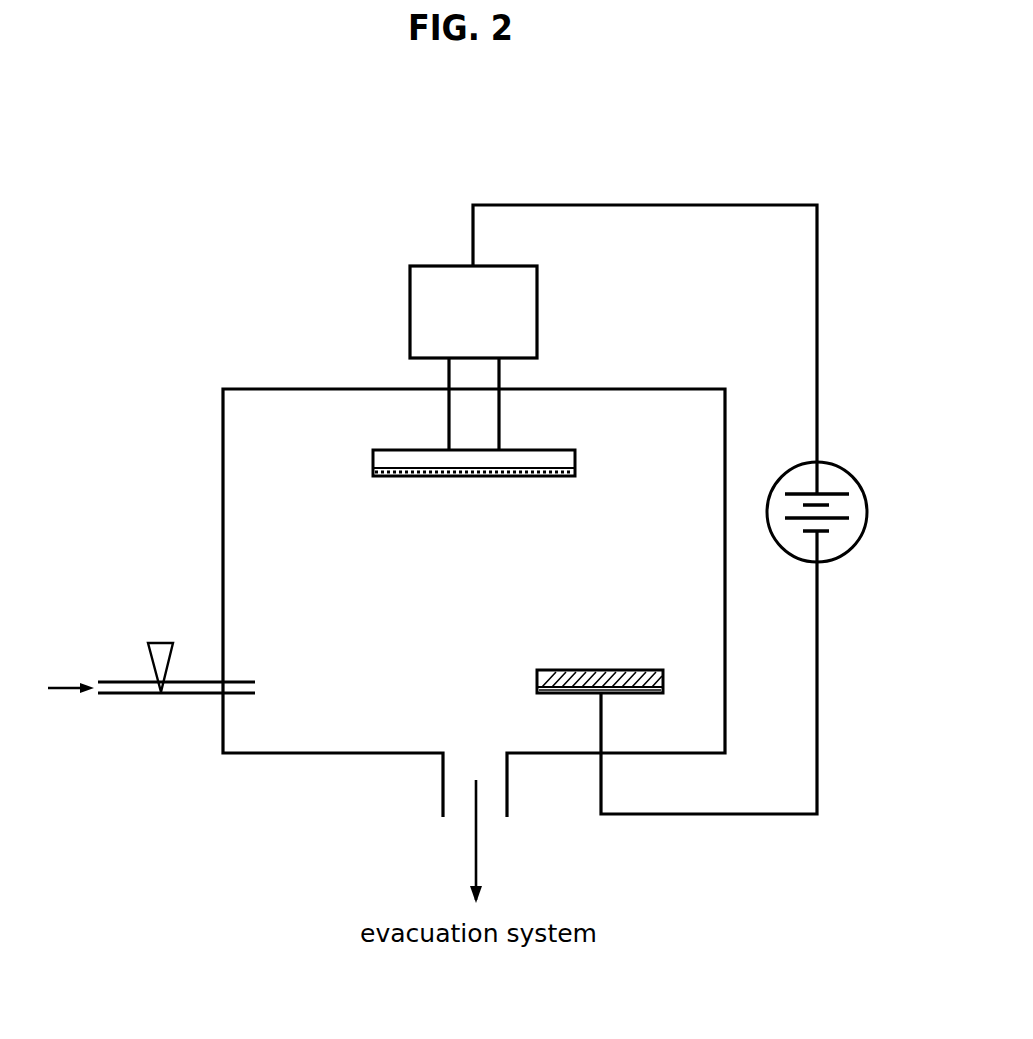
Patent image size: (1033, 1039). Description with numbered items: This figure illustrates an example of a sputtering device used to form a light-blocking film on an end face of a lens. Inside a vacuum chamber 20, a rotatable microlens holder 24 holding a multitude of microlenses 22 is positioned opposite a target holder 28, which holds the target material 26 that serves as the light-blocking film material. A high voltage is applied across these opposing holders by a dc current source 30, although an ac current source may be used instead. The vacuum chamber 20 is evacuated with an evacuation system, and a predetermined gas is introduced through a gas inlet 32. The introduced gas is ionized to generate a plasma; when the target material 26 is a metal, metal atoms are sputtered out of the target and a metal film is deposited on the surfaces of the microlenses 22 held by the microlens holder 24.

The vacuum chamber 20 is at (223, 437).
The microlenses 22 is at (542, 478).
The microlens holder 24 is at (543, 457).
The target material 26 is at (630, 669).
The target holder 28 is at (652, 694).
The dc current source 30 is at (837, 478).
The gas inlet 32 is at (122, 696).